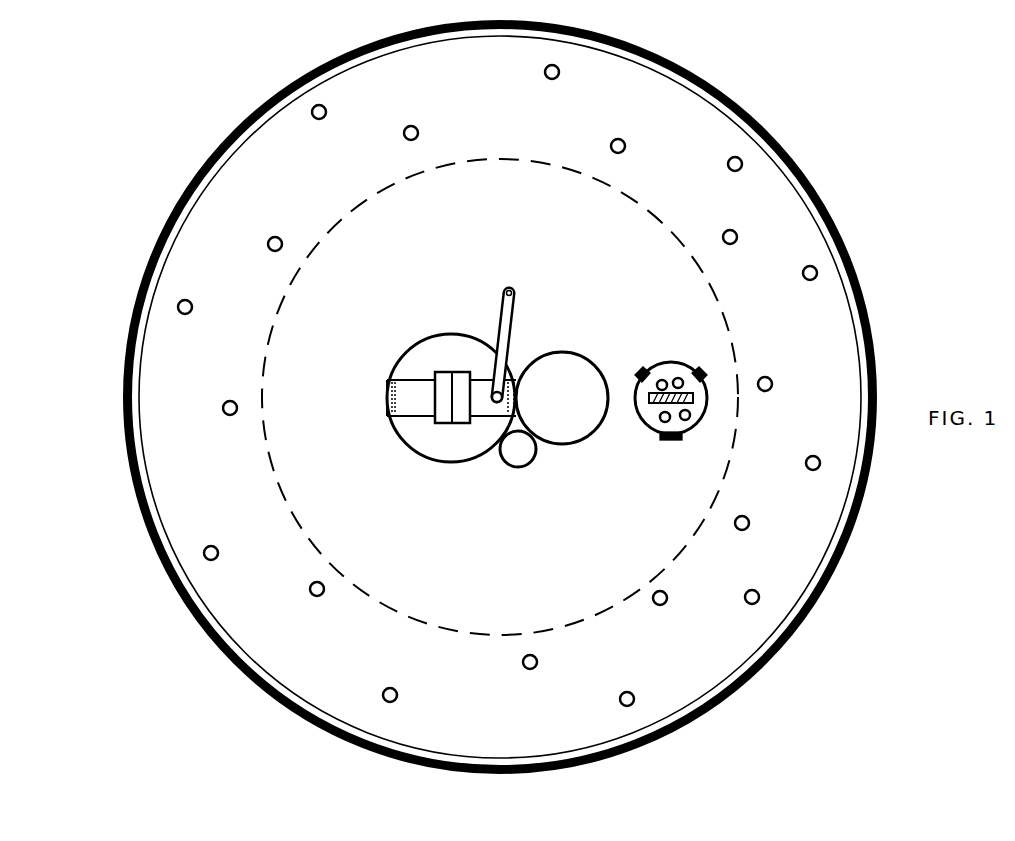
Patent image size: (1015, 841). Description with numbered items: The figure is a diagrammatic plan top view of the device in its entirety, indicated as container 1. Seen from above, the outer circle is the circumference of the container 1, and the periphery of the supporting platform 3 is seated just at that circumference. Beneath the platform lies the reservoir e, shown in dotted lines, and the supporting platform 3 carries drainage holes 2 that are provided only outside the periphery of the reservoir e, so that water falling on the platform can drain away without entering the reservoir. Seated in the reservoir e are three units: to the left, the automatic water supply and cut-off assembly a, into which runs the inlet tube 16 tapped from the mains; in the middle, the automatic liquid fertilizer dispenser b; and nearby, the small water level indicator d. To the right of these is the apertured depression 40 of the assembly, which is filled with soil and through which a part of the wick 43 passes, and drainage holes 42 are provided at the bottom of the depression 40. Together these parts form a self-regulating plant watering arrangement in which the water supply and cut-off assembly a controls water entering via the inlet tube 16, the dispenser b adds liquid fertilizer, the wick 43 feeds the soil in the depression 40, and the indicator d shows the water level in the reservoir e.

The container 1 is at (772, 140).
The holes 2 is at (817, 272).
The supporting platform 3 is at (797, 240).
The inlet tube 16 is at (510, 333).
The apertured depression 40 is at (673, 389).
The drainage holes 42 is at (661, 419).
The wick 43 is at (692, 405).
The automatic water supply and cut-off assembly a is at (442, 332).
The automatic liquid fertilizer dispenser b is at (567, 351).
The water level indicator d is at (533, 457).
The reservoir e is at (717, 295).